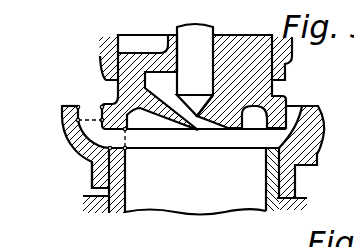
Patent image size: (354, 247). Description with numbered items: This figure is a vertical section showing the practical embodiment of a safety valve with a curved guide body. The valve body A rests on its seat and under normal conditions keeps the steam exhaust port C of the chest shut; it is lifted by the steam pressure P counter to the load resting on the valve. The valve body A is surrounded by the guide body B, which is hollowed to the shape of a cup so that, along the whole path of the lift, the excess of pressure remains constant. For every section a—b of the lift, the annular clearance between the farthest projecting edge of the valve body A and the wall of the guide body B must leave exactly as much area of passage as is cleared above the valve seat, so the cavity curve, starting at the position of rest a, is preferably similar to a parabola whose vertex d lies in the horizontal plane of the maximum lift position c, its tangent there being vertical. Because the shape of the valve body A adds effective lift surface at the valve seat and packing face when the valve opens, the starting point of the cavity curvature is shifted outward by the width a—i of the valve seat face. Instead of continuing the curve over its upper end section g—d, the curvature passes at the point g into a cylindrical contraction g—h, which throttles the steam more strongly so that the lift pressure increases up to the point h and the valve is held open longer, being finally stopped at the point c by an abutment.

The position of rest a is at (197, 3).
The valve body A is at (285, 97).
The guide body B is at (305, 122).
The steam exhaust port C is at (242, 192).
The steam pressure P is at (196, 155).
The lift section point b is at (127, 131).
The maximum lift position c is at (101, 106).
The vertex of cavity curve d is at (75, 106).
The upper end of contraction h is at (77, 106).
The transition point g is at (62, 122).
The outer edge of valve seat face i is at (86, 156).